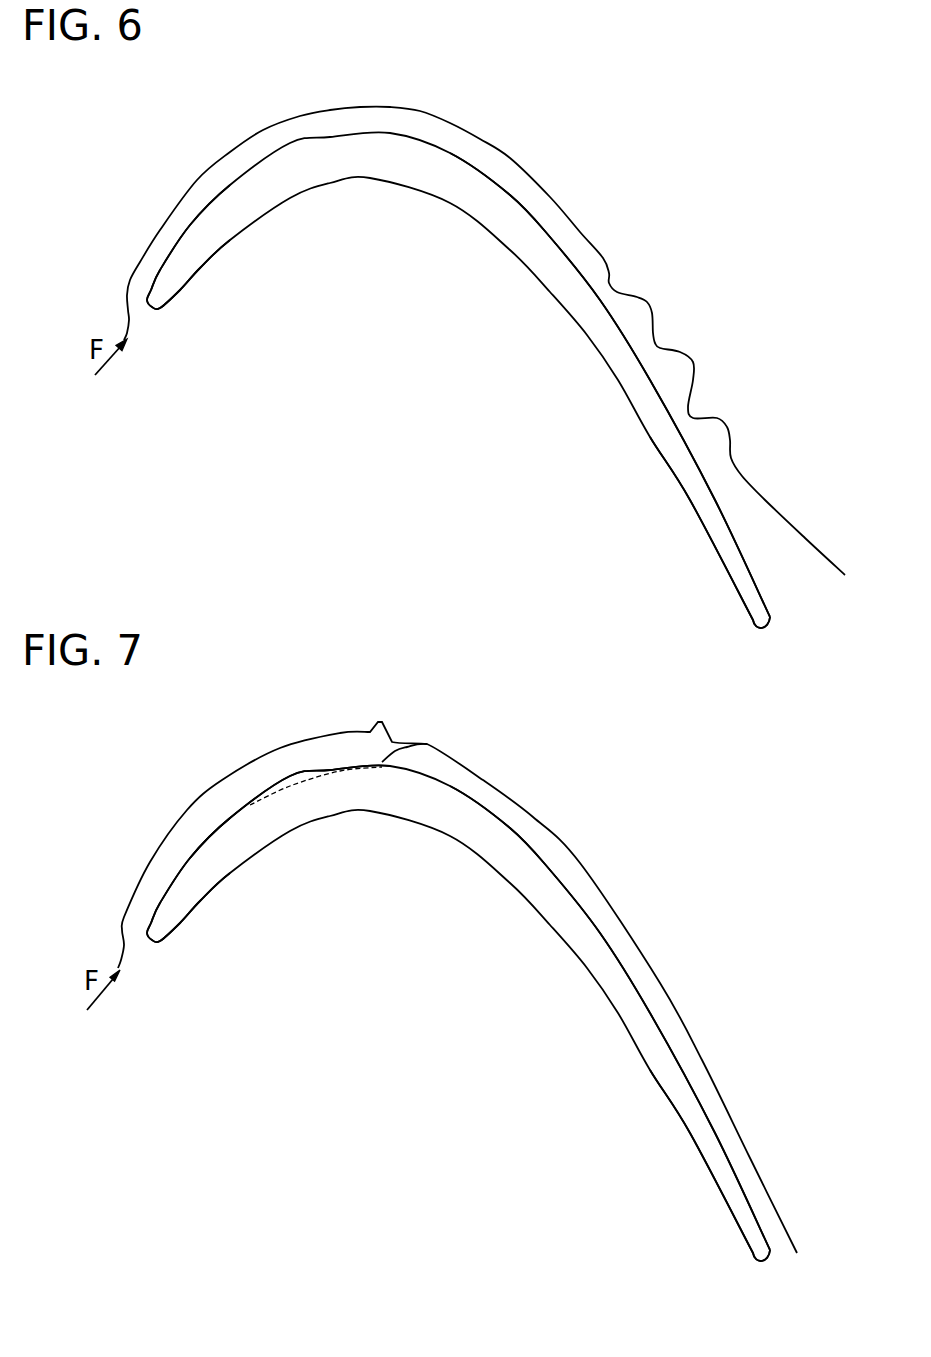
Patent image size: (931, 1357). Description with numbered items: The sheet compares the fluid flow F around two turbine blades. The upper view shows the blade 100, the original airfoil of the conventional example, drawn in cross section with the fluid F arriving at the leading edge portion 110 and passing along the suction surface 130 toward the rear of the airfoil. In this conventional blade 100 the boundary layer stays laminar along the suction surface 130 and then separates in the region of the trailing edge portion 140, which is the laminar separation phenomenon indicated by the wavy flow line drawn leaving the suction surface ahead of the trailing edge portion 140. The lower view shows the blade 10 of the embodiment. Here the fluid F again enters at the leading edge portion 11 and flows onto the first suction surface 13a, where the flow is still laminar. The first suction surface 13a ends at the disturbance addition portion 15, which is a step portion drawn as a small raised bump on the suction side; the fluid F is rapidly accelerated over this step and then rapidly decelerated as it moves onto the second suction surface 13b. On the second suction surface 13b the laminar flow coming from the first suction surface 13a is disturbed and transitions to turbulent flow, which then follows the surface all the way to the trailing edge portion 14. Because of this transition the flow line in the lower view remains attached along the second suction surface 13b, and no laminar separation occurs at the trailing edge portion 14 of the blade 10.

In FIG. 6, the blade 100 is at (723, 232).
In FIG. 6, the leading edge portion 110 is at (148, 310).
In FIG. 6, the suction surface 130 is at (560, 246).
In FIG. 6, the trailing edge portion 140 is at (762, 629).
In FIG. 7, the blade 10 is at (703, 877).
In FIG. 7, the leading edge portion 11 is at (150, 942).
In FIG. 7, the first suction surface 13a is at (217, 830).
In FIG. 7, the second suction surface 13b is at (617, 952).
In FIG. 7, the trailing edge portion 14 is at (763, 1262).
In FIG. 7, the disturbance addition portion 15 is at (427, 745).